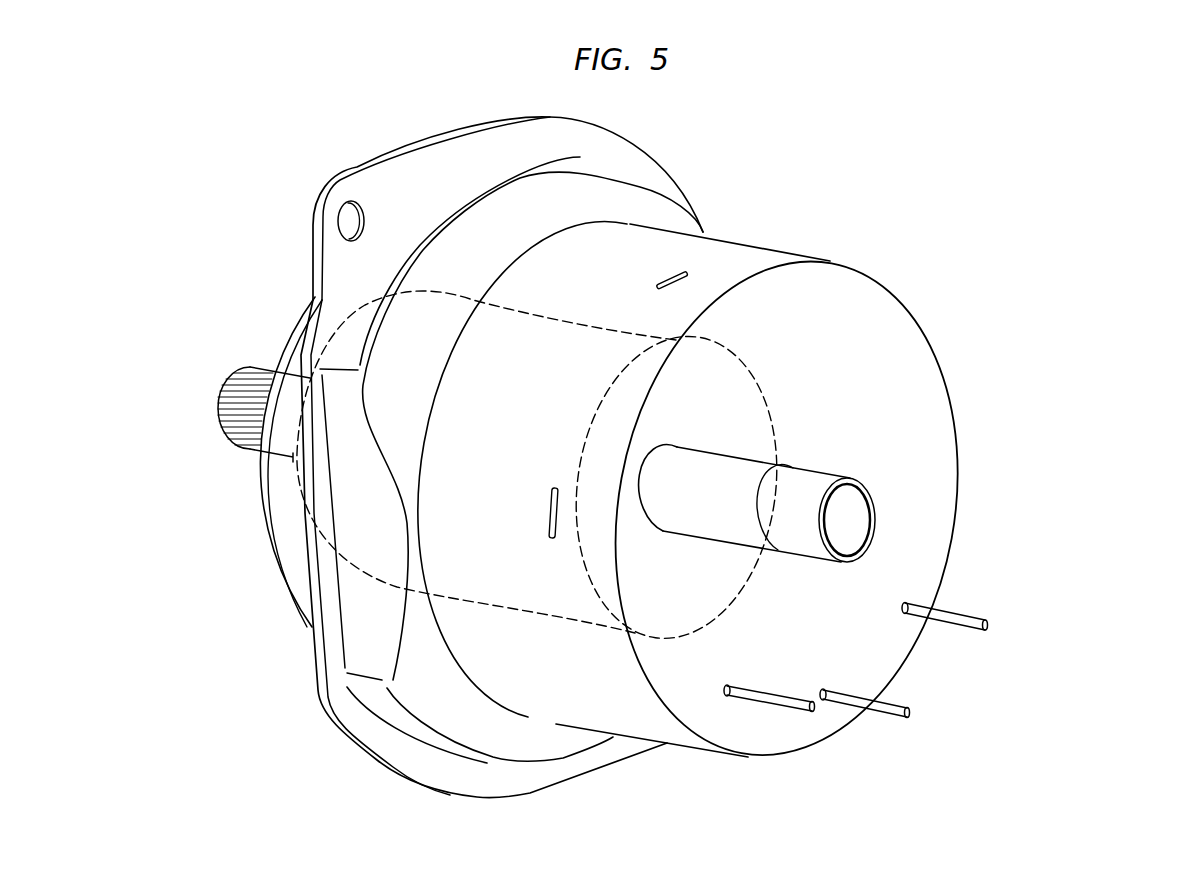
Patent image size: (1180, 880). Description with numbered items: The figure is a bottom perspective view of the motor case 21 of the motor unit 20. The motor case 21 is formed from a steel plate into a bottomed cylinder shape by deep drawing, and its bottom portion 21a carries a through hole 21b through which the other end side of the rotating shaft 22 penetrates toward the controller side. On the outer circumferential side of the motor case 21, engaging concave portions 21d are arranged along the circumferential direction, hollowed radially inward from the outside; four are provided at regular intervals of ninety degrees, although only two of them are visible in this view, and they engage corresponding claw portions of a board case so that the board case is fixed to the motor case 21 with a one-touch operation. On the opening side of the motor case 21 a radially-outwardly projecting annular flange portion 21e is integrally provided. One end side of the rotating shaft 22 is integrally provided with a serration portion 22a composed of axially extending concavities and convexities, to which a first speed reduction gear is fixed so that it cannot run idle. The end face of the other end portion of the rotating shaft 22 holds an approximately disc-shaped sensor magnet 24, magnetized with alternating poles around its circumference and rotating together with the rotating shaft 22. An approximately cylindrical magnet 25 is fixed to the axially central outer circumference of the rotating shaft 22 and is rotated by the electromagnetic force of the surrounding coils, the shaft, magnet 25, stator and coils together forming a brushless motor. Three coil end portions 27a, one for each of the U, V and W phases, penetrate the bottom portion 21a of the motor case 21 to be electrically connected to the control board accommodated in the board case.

The motor unit 20 is at (840, 254).
The motor case 21 is at (598, 677).
The bottom portion 21a is at (920, 555).
The through hole 21b is at (780, 527).
The engaging concave portion 21d is at (670, 278).
The flange portion 21e is at (333, 268).
The rotating shaft 22 is at (800, 497).
The serration portion 22a is at (243, 405).
The sensor magnet 24 is at (850, 520).
The magnet 25 is at (530, 365).
The coil end portion 27a is at (947, 617).